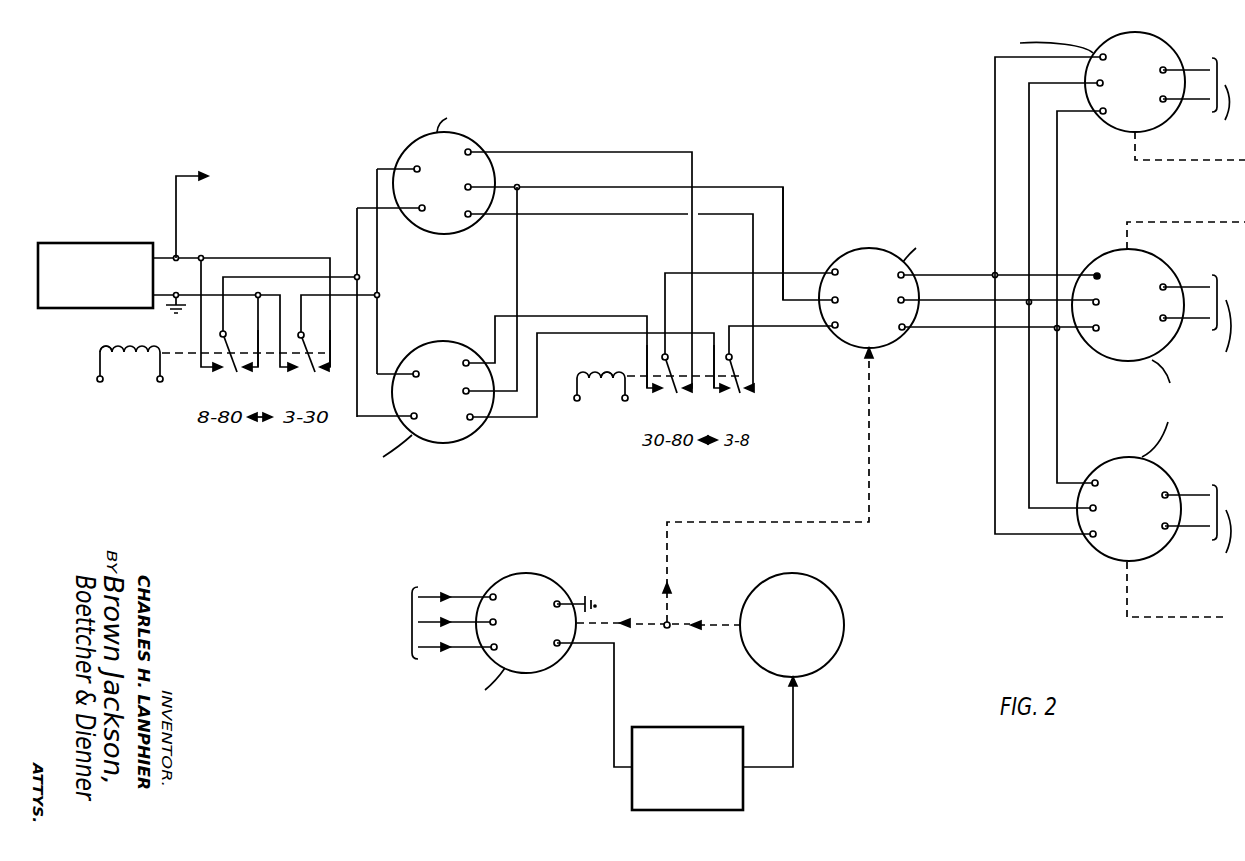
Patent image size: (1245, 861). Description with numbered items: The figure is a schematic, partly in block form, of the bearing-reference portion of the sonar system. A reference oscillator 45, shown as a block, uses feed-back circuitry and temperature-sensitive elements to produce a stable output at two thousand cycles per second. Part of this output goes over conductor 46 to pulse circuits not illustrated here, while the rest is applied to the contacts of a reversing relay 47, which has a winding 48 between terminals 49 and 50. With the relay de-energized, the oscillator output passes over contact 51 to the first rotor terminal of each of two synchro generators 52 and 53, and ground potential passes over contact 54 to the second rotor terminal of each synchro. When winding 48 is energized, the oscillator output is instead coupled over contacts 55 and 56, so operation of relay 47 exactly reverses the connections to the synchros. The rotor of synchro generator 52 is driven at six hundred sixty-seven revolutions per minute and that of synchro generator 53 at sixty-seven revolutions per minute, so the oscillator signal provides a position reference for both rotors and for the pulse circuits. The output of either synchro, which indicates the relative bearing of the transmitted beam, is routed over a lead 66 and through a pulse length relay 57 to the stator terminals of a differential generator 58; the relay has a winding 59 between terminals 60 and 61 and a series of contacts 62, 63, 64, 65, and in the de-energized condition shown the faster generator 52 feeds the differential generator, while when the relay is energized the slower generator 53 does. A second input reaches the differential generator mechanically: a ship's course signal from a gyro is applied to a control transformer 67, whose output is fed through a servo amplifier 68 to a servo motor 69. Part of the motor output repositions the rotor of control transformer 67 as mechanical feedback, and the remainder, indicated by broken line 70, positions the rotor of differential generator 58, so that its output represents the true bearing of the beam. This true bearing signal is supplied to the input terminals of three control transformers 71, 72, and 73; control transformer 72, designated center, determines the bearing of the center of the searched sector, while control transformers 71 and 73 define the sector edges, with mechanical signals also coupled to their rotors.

The reference oscillator 45 is at (95, 275).
The conductor 46 is at (176, 218).
The reversing relay 47 is at (130, 367).
The winding 48 is at (107, 345).
The terminal 49 is at (98, 382).
The terminal 50 is at (159, 383).
The contact 51 is at (317, 373).
The synchro generator 52 is at (478, 142).
The synchro generator 53 is at (478, 348).
The contact 54 is at (239, 375).
The contact 55 is at (224, 374).
The contact 56 is at (303, 378).
The pulse length relay 57 is at (601, 388).
The differential generator 58 is at (857, 351).
The winding 59 is at (610, 371).
The terminal 60 is at (577, 402).
The terminal 61 is at (625, 402).
The contact 62 is at (661, 396).
The contact 63 is at (677, 394).
The contact 64 is at (730, 396).
The contact 65 is at (741, 394).
The connecting lead 66 is at (783, 259).
The control transformer 67 is at (556, 578).
The servo amplifier 68 is at (677, 726).
The servo motor 69 is at (841, 619).
The broken line 70 is at (743, 522).
The control transformer 71 is at (1110, 40).
The control transformer 72 is at (1115, 252).
The control transformer 73 is at (1112, 458).